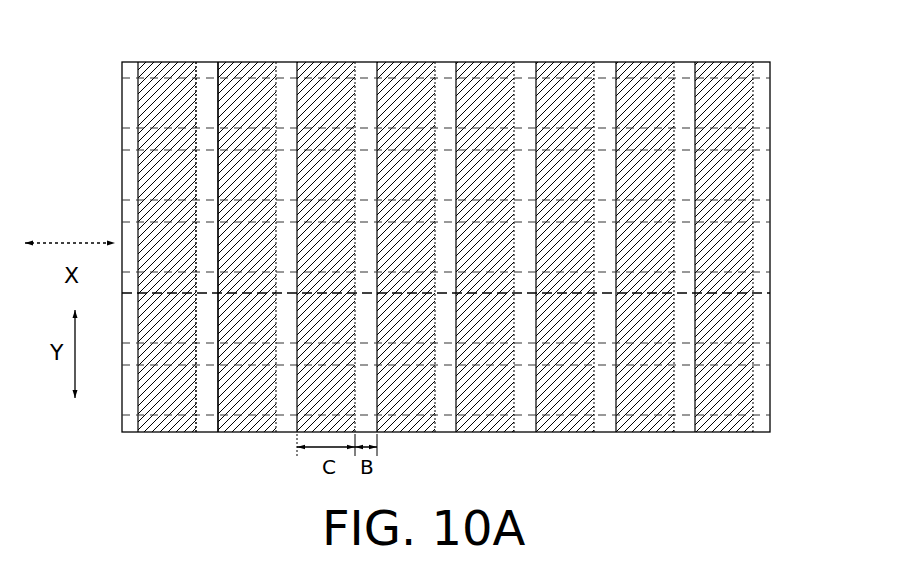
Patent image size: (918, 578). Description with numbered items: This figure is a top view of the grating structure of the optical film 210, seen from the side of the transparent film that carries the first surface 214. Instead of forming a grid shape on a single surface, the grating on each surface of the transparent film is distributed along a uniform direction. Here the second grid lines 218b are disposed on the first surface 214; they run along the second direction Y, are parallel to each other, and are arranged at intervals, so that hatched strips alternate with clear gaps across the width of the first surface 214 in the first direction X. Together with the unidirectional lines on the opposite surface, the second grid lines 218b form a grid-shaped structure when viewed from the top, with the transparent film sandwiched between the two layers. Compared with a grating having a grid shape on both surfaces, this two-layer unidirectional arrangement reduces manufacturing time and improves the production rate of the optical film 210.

The optical film 210 is at (121, 50).
The first surface 214 is at (207, 72).
The second grid lines 218b is at (313, 63).